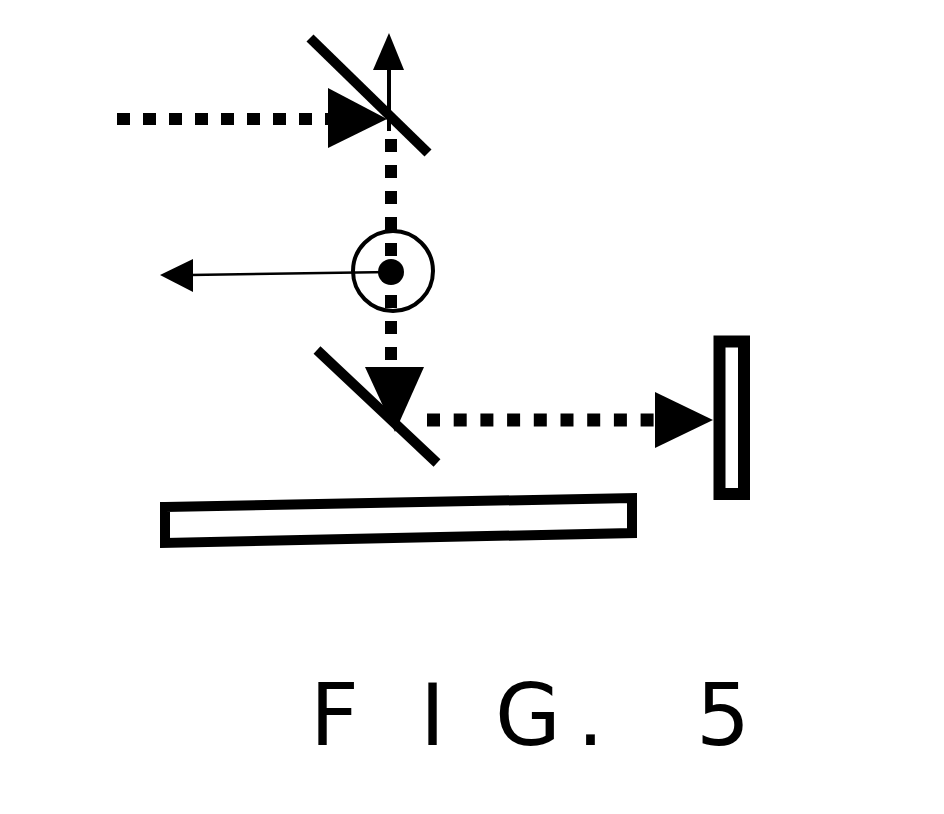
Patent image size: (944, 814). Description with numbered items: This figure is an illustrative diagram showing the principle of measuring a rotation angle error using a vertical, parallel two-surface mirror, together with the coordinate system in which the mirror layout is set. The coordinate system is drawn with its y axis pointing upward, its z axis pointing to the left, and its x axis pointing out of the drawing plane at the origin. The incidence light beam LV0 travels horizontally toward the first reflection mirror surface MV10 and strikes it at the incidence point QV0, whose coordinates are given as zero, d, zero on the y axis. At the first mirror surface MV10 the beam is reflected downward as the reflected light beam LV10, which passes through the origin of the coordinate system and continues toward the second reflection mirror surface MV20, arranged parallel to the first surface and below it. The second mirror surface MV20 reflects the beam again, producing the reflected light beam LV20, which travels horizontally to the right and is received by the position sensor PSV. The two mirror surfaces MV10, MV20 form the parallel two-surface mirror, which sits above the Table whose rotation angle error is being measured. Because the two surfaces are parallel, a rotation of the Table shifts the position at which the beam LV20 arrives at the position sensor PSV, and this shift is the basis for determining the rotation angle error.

The first reflection mirror surface MV10 is at (309, 85).
The incidence light beam LV0 is at (222, 120).
The y axis y is at (394, 73).
The incidence point on first mirror surface QV0 is at (516, 117).
The reflected light beam by first mirror LV10 is at (354, 285).
The x axis x is at (393, 271).
The z axis z is at (254, 278).
The second reflection mirror surface MV20 is at (363, 406).
The reflected light beam by second mirror LV20 is at (570, 383).
The position sensor PSV is at (782, 418).
The table Table is at (324, 513).